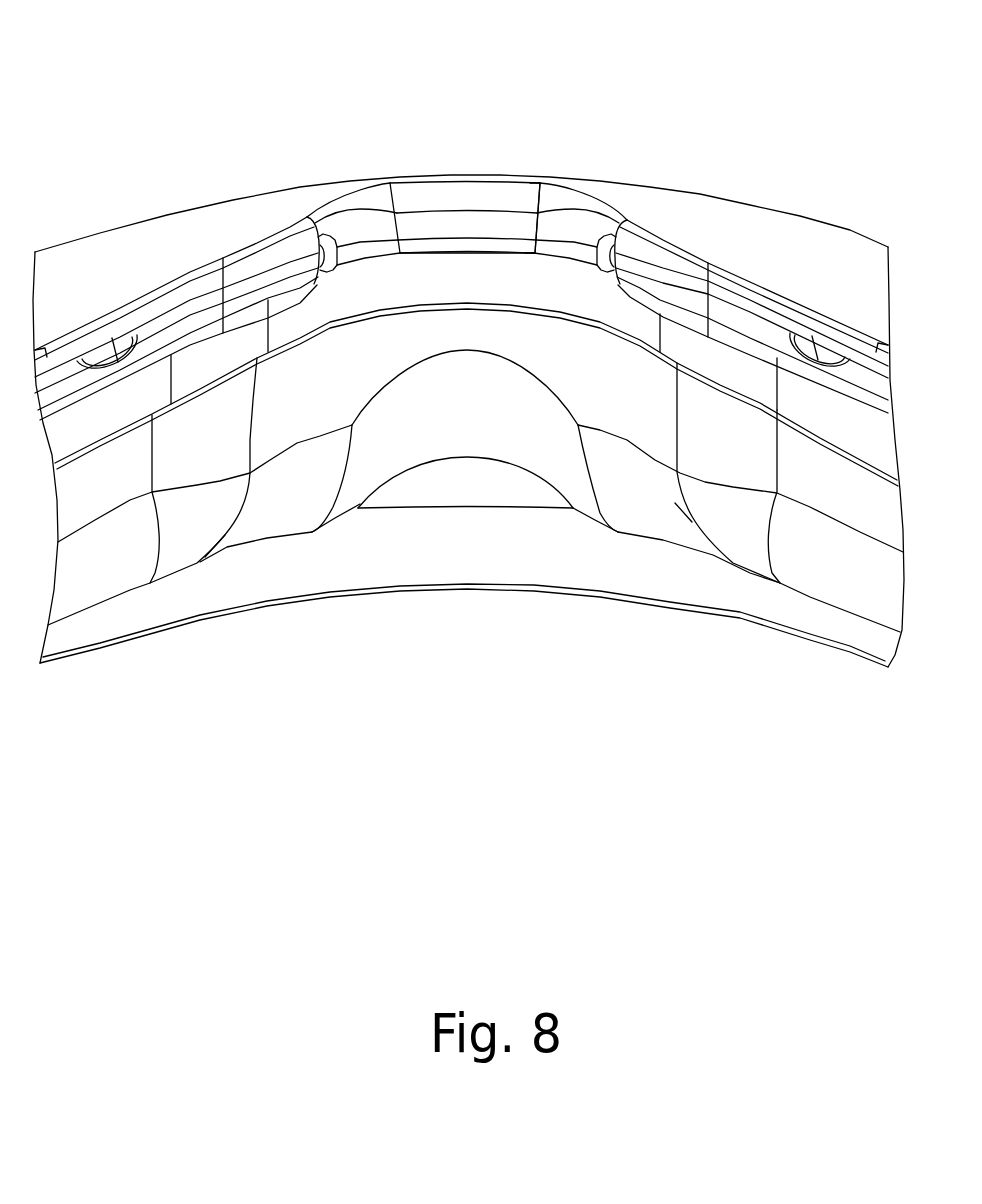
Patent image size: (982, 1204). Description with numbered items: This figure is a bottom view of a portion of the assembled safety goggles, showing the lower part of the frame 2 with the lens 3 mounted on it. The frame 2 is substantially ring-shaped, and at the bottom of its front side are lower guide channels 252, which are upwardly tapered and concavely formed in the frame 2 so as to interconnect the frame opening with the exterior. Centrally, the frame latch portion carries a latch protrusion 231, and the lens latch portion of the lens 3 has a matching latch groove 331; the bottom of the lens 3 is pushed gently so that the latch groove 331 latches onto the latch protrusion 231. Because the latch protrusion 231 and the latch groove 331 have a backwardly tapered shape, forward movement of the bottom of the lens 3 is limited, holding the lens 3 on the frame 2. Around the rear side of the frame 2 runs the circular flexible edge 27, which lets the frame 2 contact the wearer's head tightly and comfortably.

The frame 2 is at (502, 630).
The lens 3 is at (328, 135).
The circular flexible edge 27 is at (267, 530).
The latch protrusion 231 is at (465, 197).
The lower guide channel 252 is at (123, 337).
The latch groove 331 is at (550, 200).